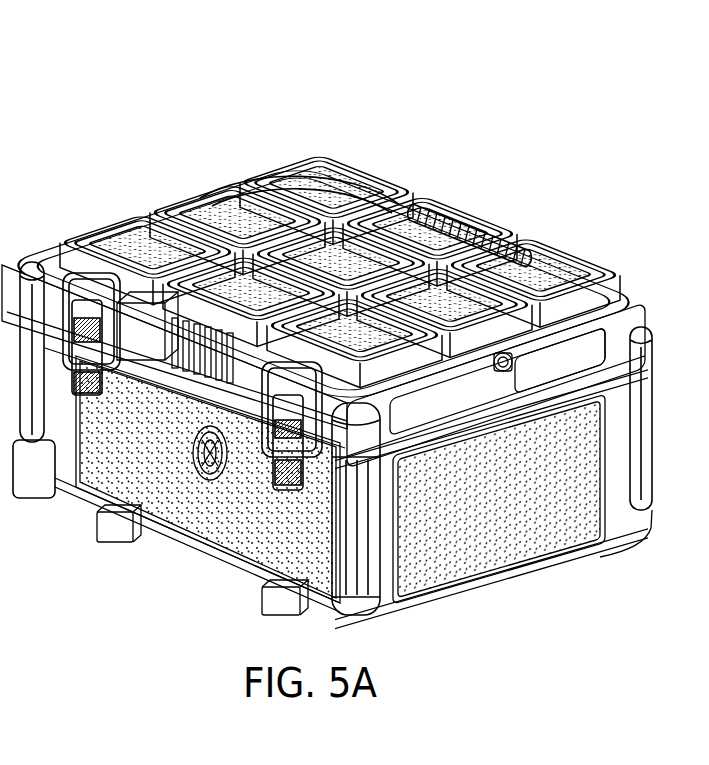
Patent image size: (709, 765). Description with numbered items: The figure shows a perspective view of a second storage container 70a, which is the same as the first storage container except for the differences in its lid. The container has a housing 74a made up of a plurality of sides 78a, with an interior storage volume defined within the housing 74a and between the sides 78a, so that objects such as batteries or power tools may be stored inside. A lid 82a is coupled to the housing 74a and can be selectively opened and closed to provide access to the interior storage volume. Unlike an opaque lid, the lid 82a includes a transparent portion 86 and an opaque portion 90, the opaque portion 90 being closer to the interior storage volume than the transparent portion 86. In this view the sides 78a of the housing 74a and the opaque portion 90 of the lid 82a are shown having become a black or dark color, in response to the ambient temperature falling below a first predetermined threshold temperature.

The second storage container 70a is at (118, 129).
The lid 82a is at (237, 217).
The transparent portion 86 is at (341, 258).
The opaque portion 90 is at (473, 220).
The housing 74a is at (208, 479).
The sides 78a is at (499, 498).